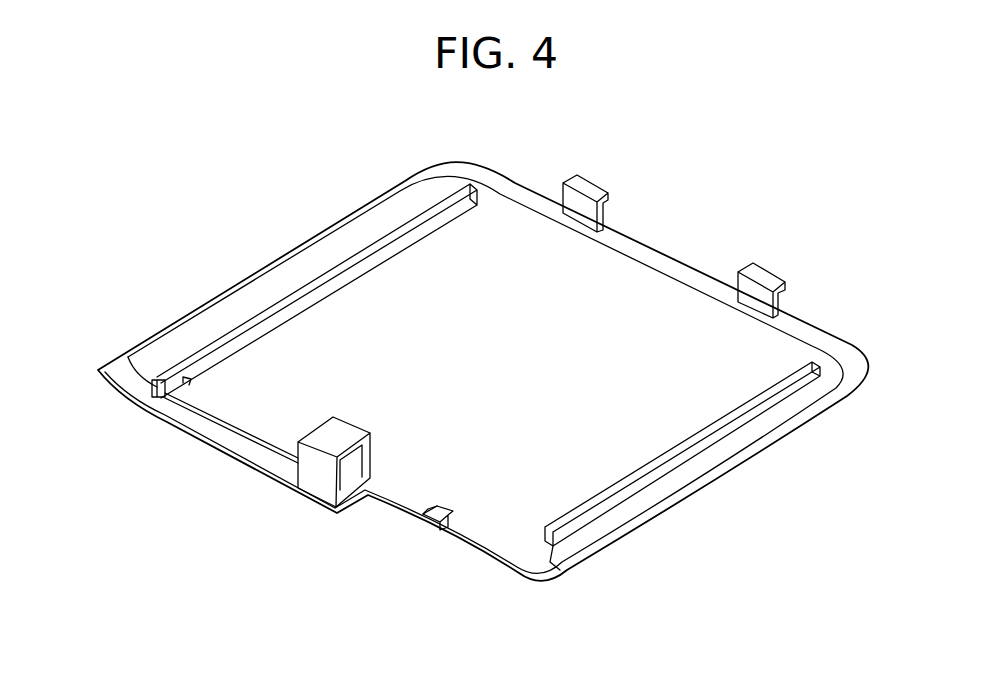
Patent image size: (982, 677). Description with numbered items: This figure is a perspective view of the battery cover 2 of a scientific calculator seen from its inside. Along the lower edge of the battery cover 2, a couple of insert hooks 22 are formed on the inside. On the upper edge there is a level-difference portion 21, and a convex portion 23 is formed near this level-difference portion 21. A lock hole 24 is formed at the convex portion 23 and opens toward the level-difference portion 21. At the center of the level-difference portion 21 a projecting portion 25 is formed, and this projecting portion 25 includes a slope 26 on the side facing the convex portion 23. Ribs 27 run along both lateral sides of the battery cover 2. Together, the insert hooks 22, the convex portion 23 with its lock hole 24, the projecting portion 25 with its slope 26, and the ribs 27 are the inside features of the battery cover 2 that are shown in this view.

The battery cover 2 is at (483, 395).
The level-difference portion 21 is at (460, 543).
The insert hooks 22 is at (592, 182).
The convex portion 23 is at (333, 467).
The lock hole 24 is at (352, 467).
The projecting portion 25 is at (450, 489).
The slope 26 is at (433, 507).
The ribs 27 is at (252, 322).